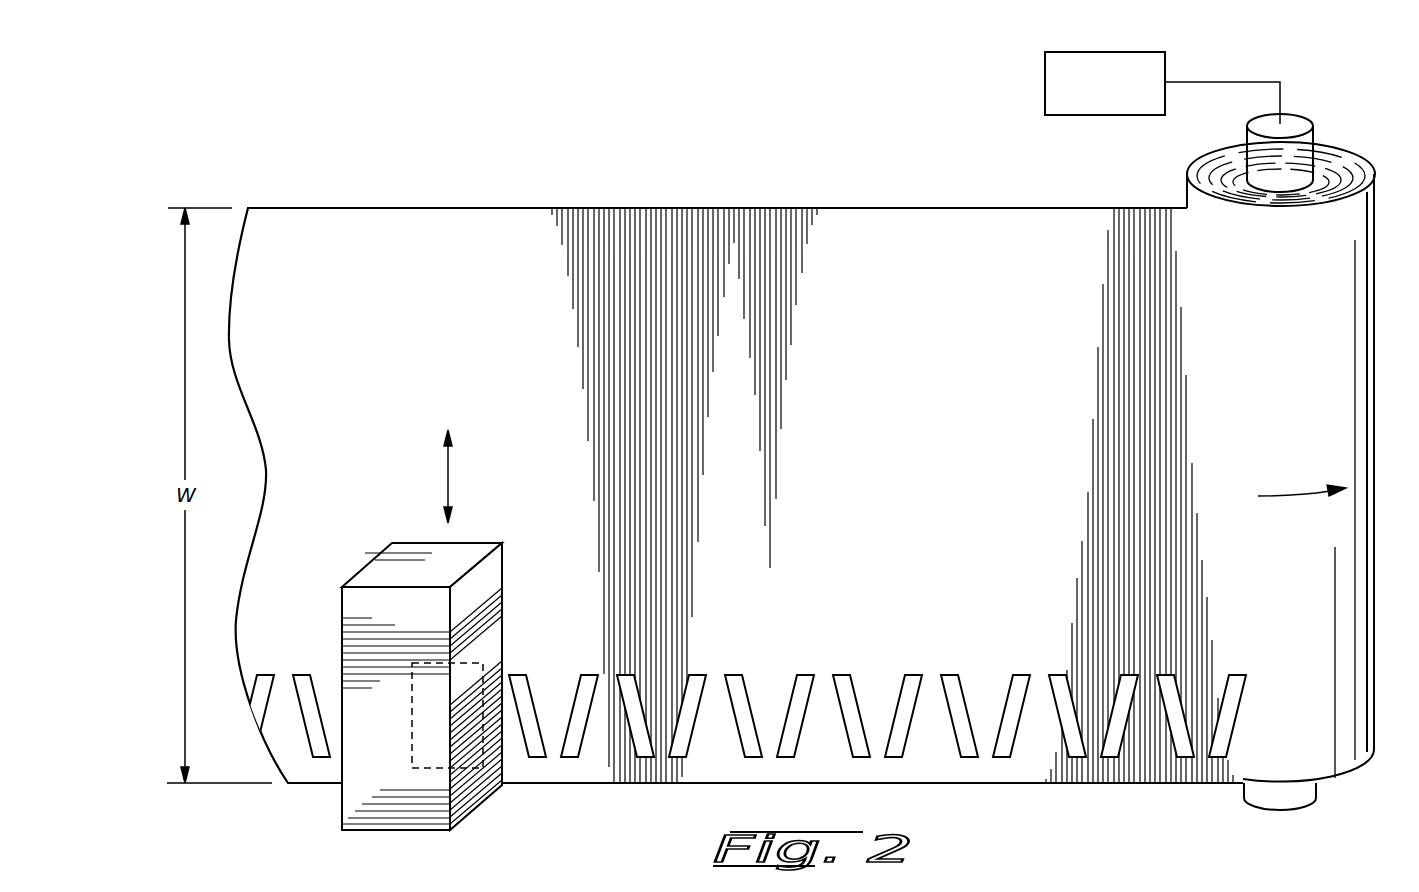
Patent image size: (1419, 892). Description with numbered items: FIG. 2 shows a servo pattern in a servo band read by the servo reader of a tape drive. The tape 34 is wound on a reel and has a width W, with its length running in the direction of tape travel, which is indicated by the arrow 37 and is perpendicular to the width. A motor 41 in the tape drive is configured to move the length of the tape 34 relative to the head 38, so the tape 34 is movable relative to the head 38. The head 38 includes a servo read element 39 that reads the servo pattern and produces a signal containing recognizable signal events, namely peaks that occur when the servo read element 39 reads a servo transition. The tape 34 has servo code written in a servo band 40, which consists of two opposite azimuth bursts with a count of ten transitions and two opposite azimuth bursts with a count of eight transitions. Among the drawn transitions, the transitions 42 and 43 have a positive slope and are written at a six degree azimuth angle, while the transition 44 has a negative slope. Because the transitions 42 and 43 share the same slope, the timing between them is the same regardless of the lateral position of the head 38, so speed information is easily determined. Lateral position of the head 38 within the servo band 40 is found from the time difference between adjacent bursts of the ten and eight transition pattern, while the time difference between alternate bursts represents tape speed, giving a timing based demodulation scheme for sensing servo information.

The tape 34 is at (910, 434).
The arrow 37 is at (1310, 494).
The head 38 is at (456, 686).
The servo read element 39 is at (412, 703).
The servo band 40 is at (777, 679).
The motor 41 is at (1108, 52).
The transition 42 is at (811, 674).
The transition 43 is at (912, 673).
The transition 44 is at (835, 673).